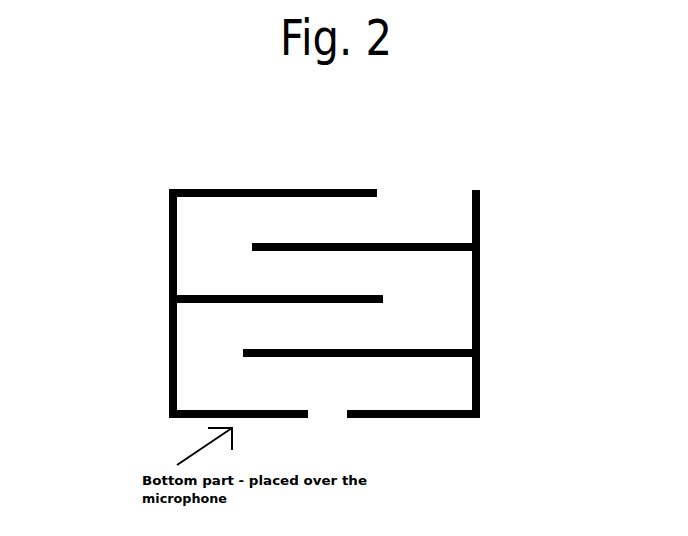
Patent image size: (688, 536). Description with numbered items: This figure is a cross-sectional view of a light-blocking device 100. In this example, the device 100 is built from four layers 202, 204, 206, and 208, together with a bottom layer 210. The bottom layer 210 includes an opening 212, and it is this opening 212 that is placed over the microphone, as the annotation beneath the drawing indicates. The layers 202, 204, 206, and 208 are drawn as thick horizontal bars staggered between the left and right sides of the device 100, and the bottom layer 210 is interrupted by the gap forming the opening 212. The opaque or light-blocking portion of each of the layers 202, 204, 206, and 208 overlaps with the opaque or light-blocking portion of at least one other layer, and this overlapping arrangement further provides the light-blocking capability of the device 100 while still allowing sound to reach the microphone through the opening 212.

The device 100 is at (413, 302).
The layer 202 is at (312, 147).
The layer 204 is at (413, 203).
The layer 206 is at (201, 266).
The layer 208 is at (426, 325).
The bottom layer 210 is at (469, 442).
The opening 212 is at (320, 446).